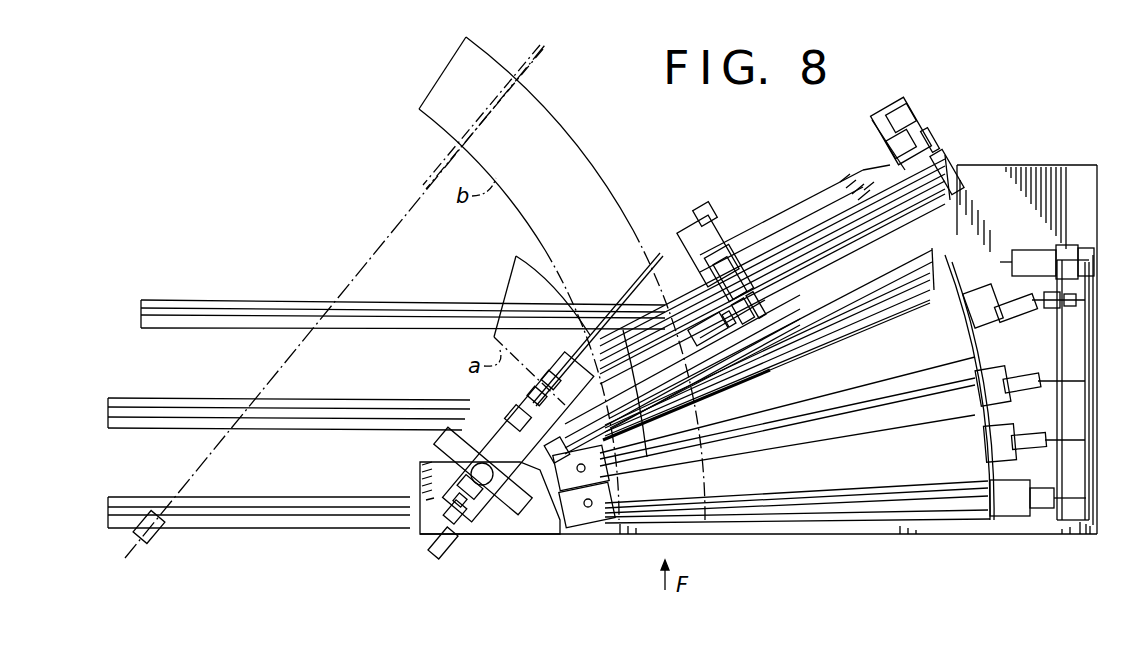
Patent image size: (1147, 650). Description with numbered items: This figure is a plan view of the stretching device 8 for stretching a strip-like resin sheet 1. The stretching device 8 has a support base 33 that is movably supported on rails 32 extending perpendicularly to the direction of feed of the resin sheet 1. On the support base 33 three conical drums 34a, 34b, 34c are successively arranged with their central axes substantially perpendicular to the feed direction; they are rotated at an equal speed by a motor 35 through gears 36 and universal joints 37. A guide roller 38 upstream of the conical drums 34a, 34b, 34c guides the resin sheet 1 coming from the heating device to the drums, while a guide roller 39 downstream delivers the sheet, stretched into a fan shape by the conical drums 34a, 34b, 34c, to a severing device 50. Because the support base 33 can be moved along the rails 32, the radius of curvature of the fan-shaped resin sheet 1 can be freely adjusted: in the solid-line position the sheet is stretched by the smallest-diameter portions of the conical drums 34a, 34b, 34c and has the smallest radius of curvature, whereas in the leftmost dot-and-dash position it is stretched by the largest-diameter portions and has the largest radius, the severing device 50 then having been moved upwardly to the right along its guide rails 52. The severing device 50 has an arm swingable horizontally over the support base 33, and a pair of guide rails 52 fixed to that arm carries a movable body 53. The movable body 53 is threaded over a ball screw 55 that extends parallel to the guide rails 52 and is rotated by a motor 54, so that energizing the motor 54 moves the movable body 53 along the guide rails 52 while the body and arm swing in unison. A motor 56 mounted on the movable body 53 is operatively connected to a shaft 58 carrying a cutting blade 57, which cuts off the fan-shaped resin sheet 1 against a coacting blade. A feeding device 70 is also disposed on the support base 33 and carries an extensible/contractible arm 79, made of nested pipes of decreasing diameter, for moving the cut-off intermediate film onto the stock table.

The strip-like resin sheet 1 is at (548, 108).
The stretching device 8 is at (800, 535).
The rails 32 is at (168, 412).
The support base 33 is at (1018, 195).
The conical drum 34a is at (903, 484).
The conical drum 34b is at (1045, 355).
The conical drum 34c is at (848, 358).
The motor 35 is at (1046, 262).
The gears 36 is at (1088, 313).
The universal joints 37 is at (1008, 312).
The guide roller 38 is at (968, 510).
The guide roller 39 is at (890, 278).
The severing device 50 is at (790, 270).
The guide rails 52 is at (820, 226).
The movable body 53 is at (700, 300).
The motor 54 is at (912, 125).
The ball screw 55 is at (945, 165).
The motor 56 is at (740, 235).
The cutting blade 57 is at (655, 390).
The shaft 58 is at (715, 355).
The feeding device 70 is at (172, 537).
The extensible/contractible arm 79 is at (636, 290).